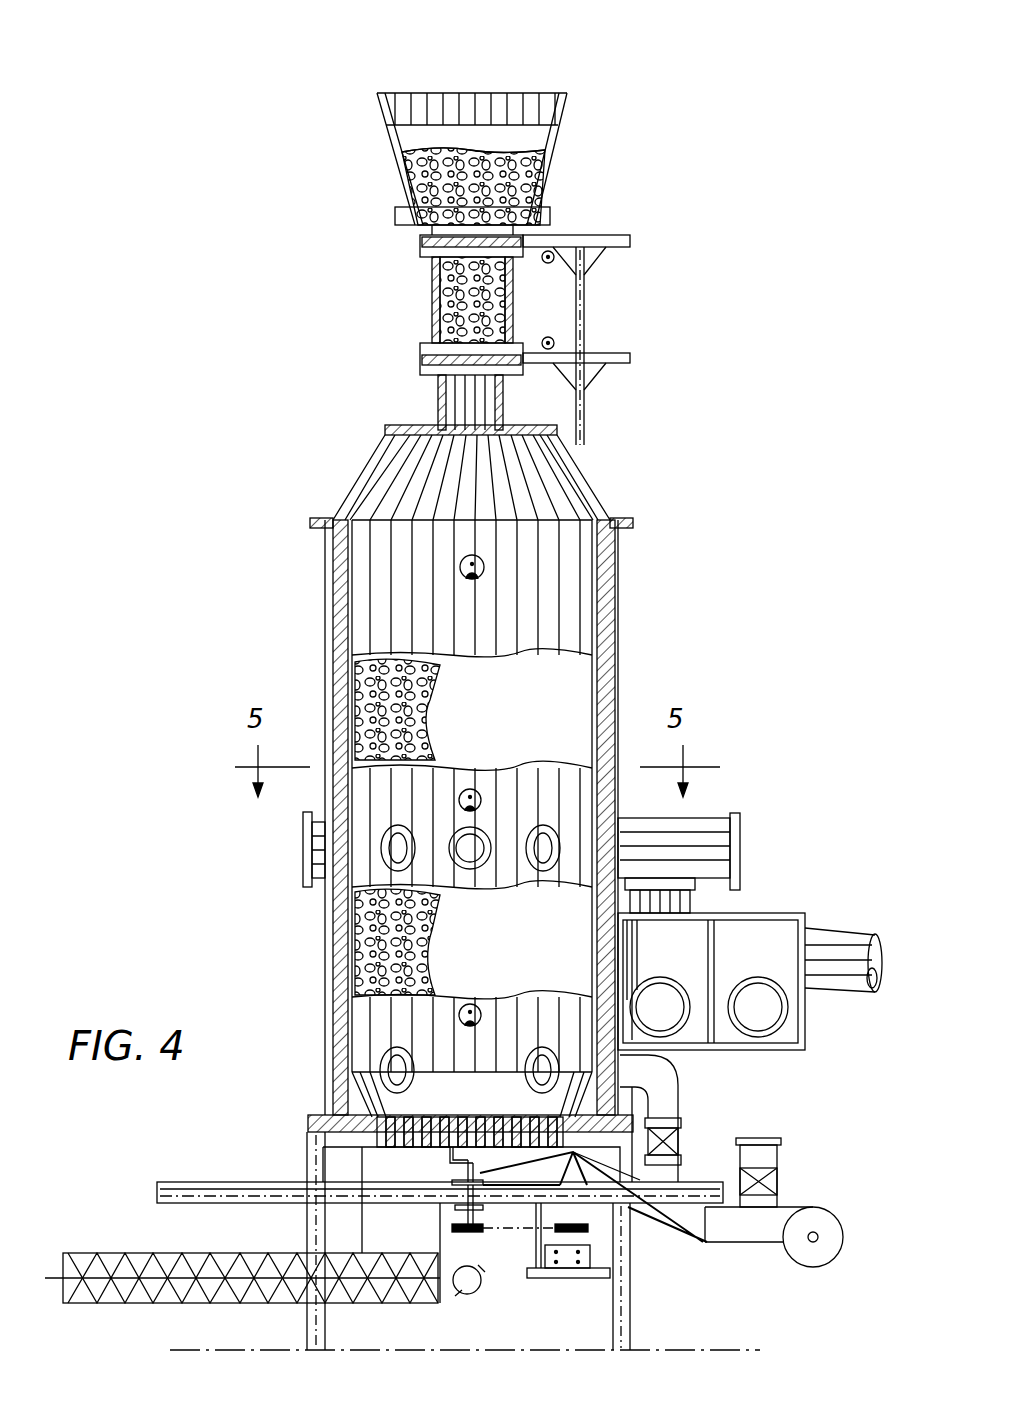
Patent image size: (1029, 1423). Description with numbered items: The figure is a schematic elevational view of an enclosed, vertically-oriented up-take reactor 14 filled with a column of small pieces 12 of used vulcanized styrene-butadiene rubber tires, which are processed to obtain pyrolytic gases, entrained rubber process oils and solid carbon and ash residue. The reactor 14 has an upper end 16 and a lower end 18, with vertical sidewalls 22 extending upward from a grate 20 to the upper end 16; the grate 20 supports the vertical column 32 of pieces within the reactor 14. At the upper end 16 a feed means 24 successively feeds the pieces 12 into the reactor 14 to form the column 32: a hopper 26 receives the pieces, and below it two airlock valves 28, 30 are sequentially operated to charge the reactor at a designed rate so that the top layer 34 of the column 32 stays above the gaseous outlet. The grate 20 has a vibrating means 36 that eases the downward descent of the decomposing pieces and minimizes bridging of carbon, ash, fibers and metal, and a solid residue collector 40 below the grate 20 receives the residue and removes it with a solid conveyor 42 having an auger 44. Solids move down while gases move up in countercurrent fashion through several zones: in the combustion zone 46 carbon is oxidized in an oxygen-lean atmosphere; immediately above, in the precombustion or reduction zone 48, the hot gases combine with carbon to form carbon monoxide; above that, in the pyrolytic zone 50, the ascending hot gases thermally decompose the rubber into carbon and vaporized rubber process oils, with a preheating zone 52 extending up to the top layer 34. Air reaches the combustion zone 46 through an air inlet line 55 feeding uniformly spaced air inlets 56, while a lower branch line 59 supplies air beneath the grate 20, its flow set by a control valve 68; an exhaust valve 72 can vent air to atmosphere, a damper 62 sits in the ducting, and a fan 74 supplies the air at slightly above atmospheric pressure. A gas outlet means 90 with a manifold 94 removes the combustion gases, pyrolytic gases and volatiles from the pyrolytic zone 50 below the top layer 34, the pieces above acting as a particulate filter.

The small pieces 12 is at (446, 135).
The reactor 14 is at (620, 610).
The upper end 16 is at (388, 492).
The lower end 18 is at (372, 1093).
The grate 20 is at (380, 1135).
The vertical sidewalls 22 is at (340, 622).
The feed means 24 is at (552, 80).
The hopper 26 is at (548, 135).
The airlock valve 28 is at (598, 235).
The airlock valve 30 is at (608, 353).
The vertical column 32 is at (357, 705).
The top layer 34 is at (448, 655).
The vibrating means 36 is at (480, 1232).
The solid residue collector 40 is at (365, 1170).
The solid conveyor 42 is at (368, 1303).
The auger 44 is at (218, 1265).
The combustion zone 46 is at (472, 1056).
The precombustion or reduction zone 48 is at (472, 952).
The pyrolytic zone 50 is at (540, 775).
The upper zone 52 is at (472, 710).
The air inlet line 55 is at (668, 1082).
The air inlets 56 is at (530, 1078).
The lower branch line 59 is at (703, 1242).
The damper valve 62 is at (680, 1142).
The control valve 68 is at (628, 1207).
The exhaust valve 72 is at (780, 1165).
The fan 74 is at (812, 1258).
The gas outlet means 90 is at (712, 808).
The manifold 94 is at (450, 840).